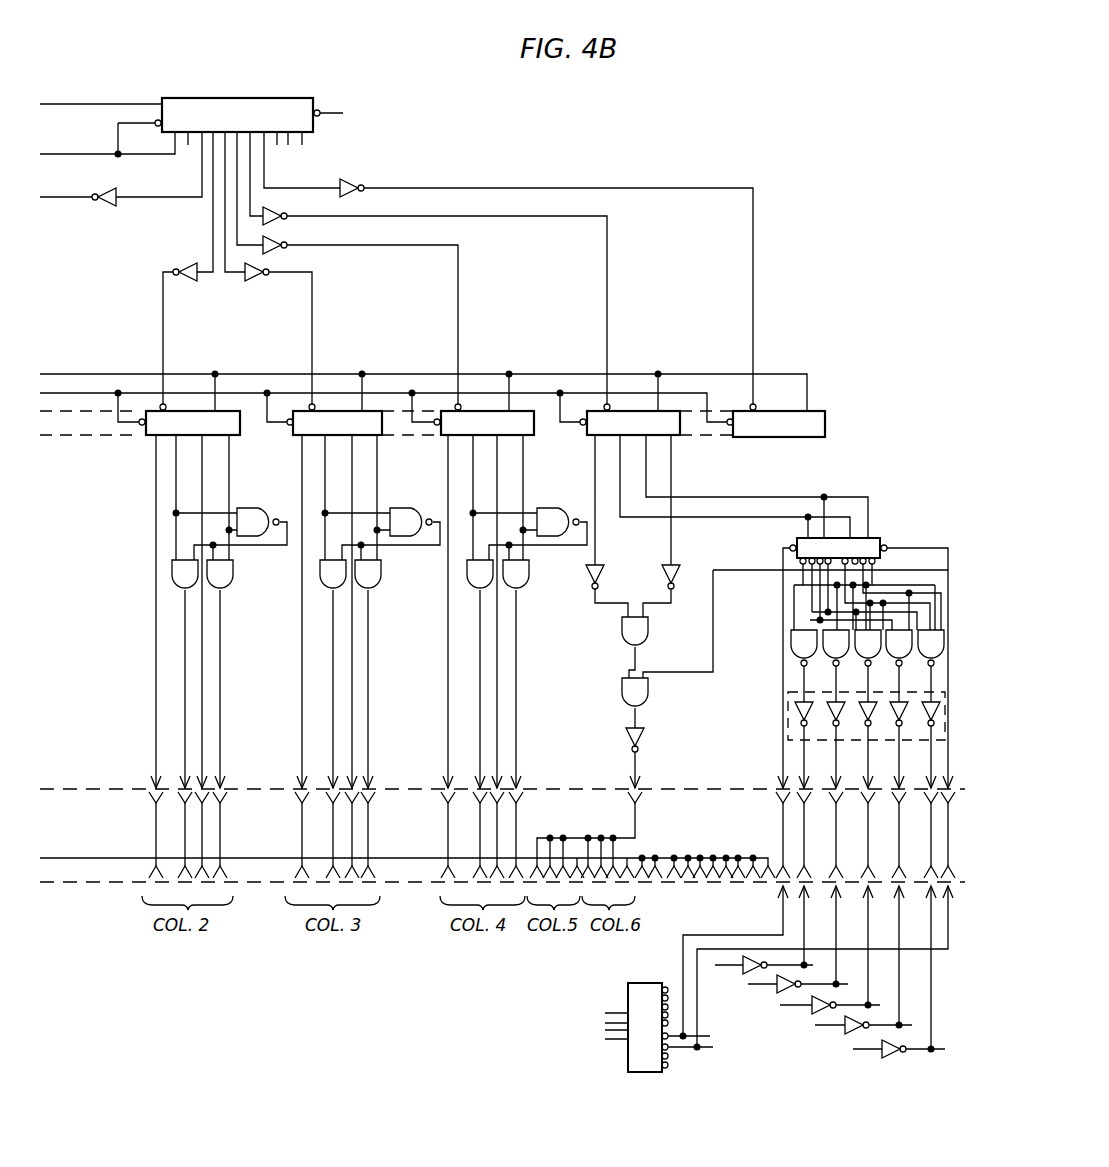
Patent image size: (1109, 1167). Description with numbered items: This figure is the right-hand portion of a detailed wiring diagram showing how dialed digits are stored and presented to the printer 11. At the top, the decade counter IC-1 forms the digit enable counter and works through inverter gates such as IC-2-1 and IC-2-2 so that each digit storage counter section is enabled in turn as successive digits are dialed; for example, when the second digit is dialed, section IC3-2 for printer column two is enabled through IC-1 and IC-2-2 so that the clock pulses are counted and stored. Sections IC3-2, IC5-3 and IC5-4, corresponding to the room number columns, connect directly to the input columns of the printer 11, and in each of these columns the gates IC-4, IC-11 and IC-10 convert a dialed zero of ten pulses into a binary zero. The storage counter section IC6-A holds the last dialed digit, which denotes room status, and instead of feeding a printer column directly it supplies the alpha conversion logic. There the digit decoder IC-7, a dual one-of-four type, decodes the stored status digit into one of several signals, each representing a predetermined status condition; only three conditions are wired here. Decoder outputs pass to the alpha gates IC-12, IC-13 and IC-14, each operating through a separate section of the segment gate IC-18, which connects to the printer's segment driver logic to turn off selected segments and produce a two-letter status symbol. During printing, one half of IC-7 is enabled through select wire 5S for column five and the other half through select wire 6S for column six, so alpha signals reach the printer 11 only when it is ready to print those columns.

The decade counter IC-1 is at (191, 128).
The inverter gate IC-2-1 is at (93, 216).
The inverter gate IC-2-2 is at (183, 280).
The digit storage counter section IC3-2 is at (193, 423).
The digit storage counter section IC5-3 is at (337, 423).
The digit storage counter section IC5-4 is at (487, 423).
The storage counter section IC6-A is at (633, 423).
The NAND gate IC-4 is at (567, 494).
The AND gate IC-11 is at (190, 585).
The AND gate IC-10 is at (552, 600).
The digit decoder IC-7 is at (878, 538).
The alpha gate IC-12 is at (782, 662).
The alpha gate IC-13 is at (873, 667).
The alpha gate IC-14 is at (940, 655).
The segment gate IC-18 is at (790, 738).
The select wire 5S is at (783, 758).
The select wire 6S is at (937, 548).
The printer 11 is at (278, 1066).